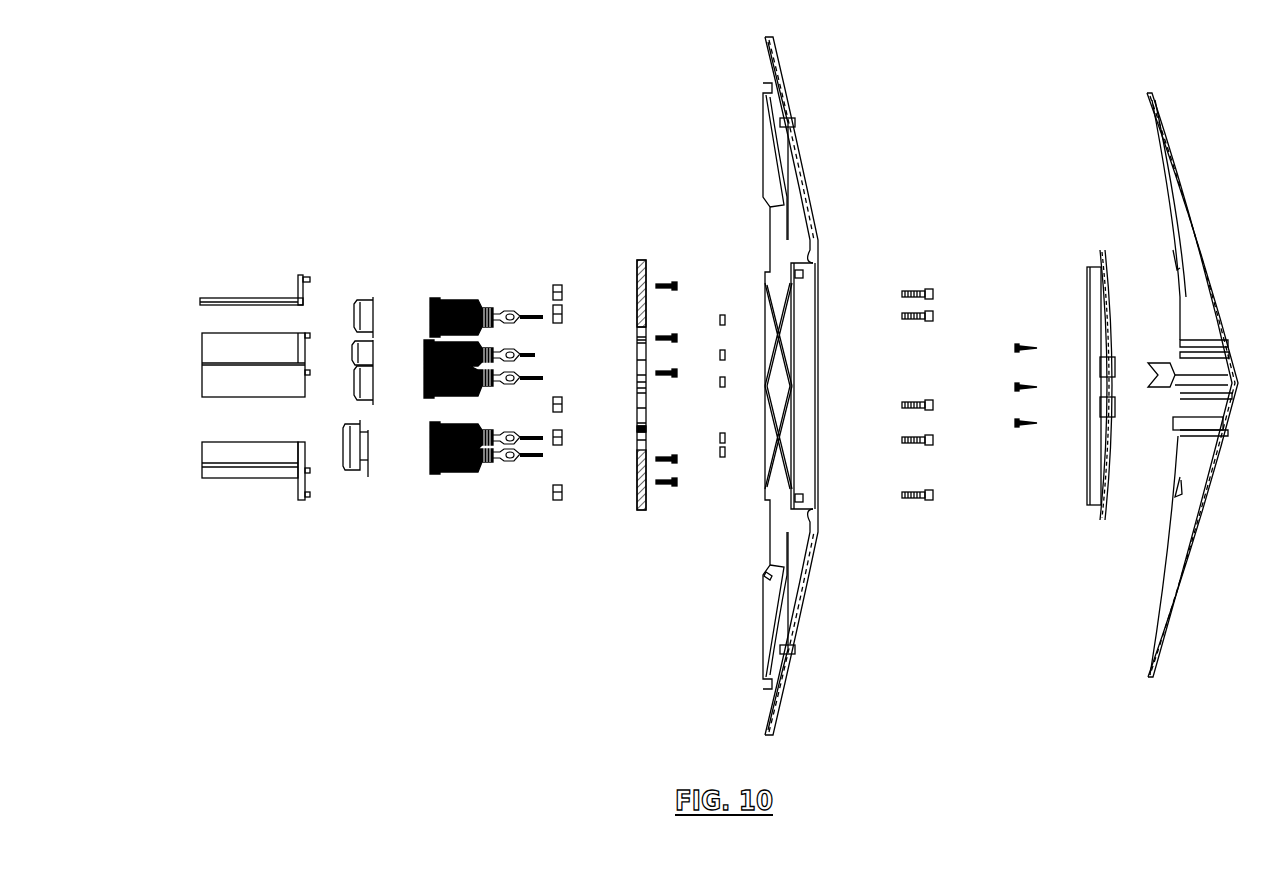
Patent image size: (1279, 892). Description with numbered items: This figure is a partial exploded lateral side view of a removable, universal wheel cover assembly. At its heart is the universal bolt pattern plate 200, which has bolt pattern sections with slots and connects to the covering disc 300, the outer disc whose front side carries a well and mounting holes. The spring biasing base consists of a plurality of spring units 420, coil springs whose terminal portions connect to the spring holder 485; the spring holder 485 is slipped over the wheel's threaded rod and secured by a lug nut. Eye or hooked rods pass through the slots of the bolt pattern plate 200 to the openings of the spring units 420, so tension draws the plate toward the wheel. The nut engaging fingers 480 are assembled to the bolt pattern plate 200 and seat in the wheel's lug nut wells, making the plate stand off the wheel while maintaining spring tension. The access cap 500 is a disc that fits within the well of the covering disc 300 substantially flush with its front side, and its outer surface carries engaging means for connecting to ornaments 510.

The universal bolt pattern plate 200 is at (642, 260).
The covering disc 300 is at (788, 83).
The spring units 420 is at (462, 300).
The nut engaging fingers 480 is at (270, 298).
The spring holder 485 is at (357, 298).
The access cap 500 is at (1093, 267).
The ornaments 510 is at (1193, 287).